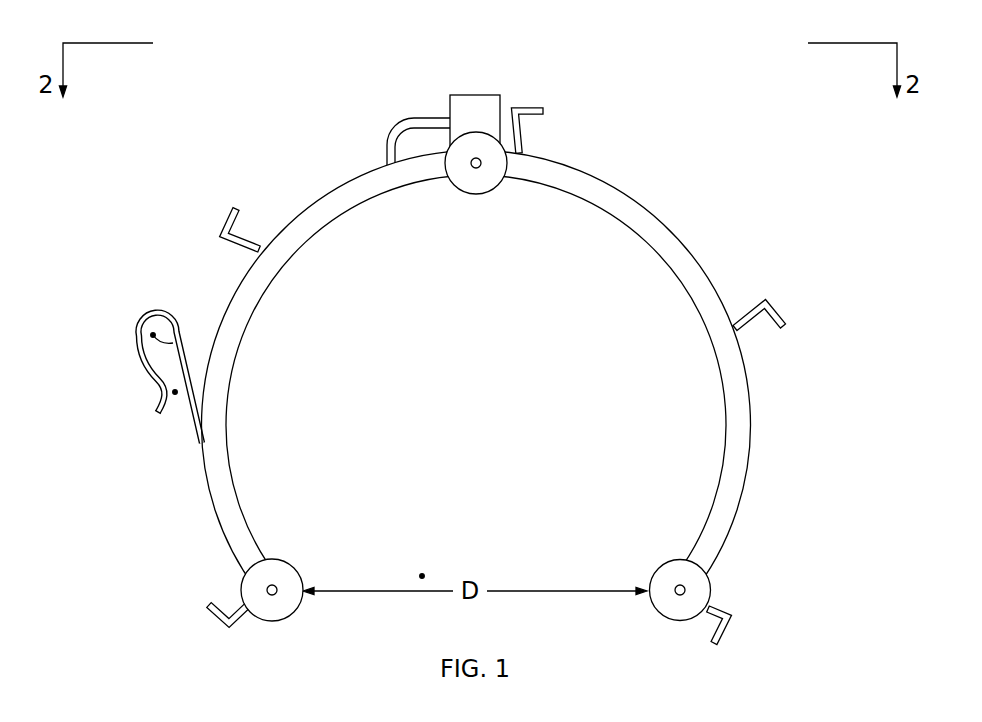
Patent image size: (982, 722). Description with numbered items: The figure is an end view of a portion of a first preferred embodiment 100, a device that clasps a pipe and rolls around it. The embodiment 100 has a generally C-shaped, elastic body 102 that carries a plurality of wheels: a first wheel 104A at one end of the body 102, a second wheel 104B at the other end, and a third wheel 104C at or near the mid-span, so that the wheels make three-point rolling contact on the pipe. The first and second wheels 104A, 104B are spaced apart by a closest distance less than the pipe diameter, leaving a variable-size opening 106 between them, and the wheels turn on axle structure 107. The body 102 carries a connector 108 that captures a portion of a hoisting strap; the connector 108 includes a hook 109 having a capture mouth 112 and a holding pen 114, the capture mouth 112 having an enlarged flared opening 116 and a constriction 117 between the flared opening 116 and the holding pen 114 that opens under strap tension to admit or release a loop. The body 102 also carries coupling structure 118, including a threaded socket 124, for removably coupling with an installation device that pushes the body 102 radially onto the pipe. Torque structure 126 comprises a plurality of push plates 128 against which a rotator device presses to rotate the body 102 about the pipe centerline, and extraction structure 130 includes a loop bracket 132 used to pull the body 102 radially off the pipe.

The embodiment 100 is at (651, 142).
The C-shaped body 102 is at (677, 248).
The first wheel 104A is at (700, 590).
The second wheel 104B is at (280, 573).
The third wheel 104C is at (466, 180).
The variable-size opening 106 is at (422, 575).
The axle structure 107 is at (481, 168).
The connector 108 is at (101, 412).
The hook 109 is at (138, 323).
The capture mouth 112 is at (175, 393).
The holding pen 114 is at (185, 330).
The flared opening 116 is at (188, 428).
The constriction 117 is at (134, 385).
The coupling structure 118 is at (536, 71).
The threaded socket 124 is at (478, 108).
The torque structure 126 is at (791, 340).
The push plate 128 is at (521, 132).
The extraction structure 130 is at (322, 150).
The loop bracket 132 is at (392, 140).